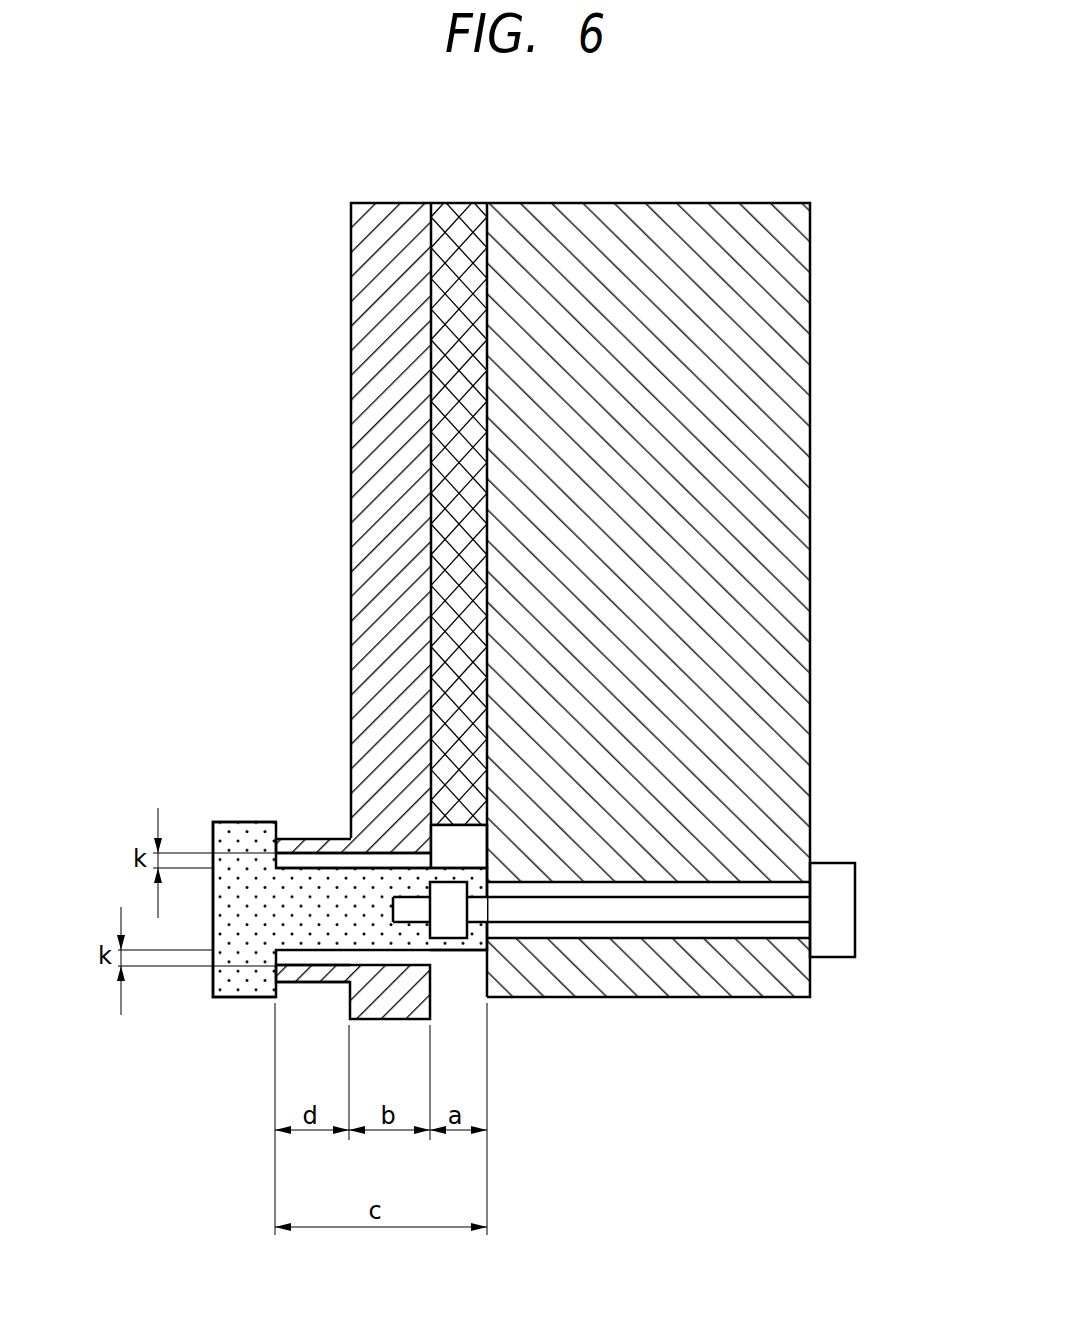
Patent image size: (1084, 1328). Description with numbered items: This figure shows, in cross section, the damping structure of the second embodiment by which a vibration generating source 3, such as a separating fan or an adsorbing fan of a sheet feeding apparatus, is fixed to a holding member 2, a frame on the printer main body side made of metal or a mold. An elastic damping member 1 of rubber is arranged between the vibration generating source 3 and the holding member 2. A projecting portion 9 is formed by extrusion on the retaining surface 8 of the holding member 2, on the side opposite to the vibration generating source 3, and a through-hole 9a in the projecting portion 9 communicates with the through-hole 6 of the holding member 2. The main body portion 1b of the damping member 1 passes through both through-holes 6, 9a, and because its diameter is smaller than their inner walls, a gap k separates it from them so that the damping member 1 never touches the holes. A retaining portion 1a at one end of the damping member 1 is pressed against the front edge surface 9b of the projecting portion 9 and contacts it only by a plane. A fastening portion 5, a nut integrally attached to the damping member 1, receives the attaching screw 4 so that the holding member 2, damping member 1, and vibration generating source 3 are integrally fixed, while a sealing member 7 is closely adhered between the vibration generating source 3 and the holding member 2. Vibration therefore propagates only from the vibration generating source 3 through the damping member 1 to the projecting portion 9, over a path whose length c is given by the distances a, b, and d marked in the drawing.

The damping member 1 is at (187, 810).
The retaining portion 1a is at (247, 822).
The main body portion 1b is at (442, 950).
The holding member 2 is at (334, 342).
The vibration generating source 3 is at (787, 480).
The attaching screw 4 is at (838, 912).
The fastening portion 5 is at (455, 930).
The through-hole 6 is at (380, 860).
The sealing member 7 is at (467, 215).
The retaining surface 8 is at (367, 565).
The projecting portion 9 is at (314, 839).
The through-hole 9a is at (322, 982).
The front edge surface 9b is at (282, 975).